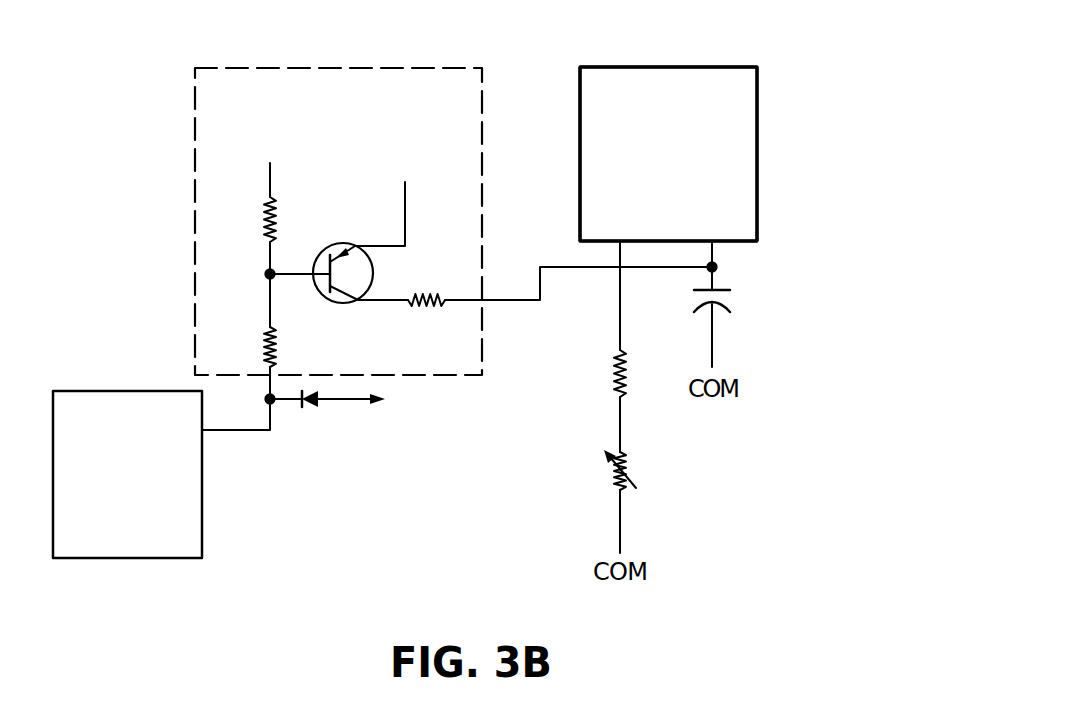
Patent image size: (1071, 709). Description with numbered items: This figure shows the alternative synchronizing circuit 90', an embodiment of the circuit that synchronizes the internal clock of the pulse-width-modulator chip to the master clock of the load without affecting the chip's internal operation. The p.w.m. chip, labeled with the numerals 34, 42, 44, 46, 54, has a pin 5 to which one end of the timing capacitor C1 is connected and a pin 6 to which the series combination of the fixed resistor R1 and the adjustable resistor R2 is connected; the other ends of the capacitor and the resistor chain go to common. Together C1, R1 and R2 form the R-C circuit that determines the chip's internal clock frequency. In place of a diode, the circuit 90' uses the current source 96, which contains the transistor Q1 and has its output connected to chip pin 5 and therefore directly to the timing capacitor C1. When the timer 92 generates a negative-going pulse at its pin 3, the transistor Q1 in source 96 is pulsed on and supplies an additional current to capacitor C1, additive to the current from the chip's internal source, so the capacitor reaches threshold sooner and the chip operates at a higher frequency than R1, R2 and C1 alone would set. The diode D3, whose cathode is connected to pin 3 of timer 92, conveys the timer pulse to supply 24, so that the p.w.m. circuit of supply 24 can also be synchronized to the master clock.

The current source 96 is at (341, 66).
The alternative synchronizing circuit 90' is at (668, 122).
The pulse width modulator 34 is at (757, 154).
The pulse width modulator 42 is at (760, 154).
The pulse width modulator 44 is at (760, 154).
The pulse width modulator 46 is at (760, 154).
The pulse width modulator 54 is at (760, 154).
The timer 92 is at (138, 391).
The timer pin 3 is at (236, 414).
The p.w.m. chip pin 5 is at (719, 265).
The p.w.m. chip pin 6 is at (628, 295).
The supply 24 is at (390, 400).
The transistor Q1 is at (343, 256).
The diode D3 is at (301, 414).
The fixed resistor R1 is at (640, 373).
The adjustable resistor R2 is at (637, 470).
The timing capacitor C1 is at (731, 325).